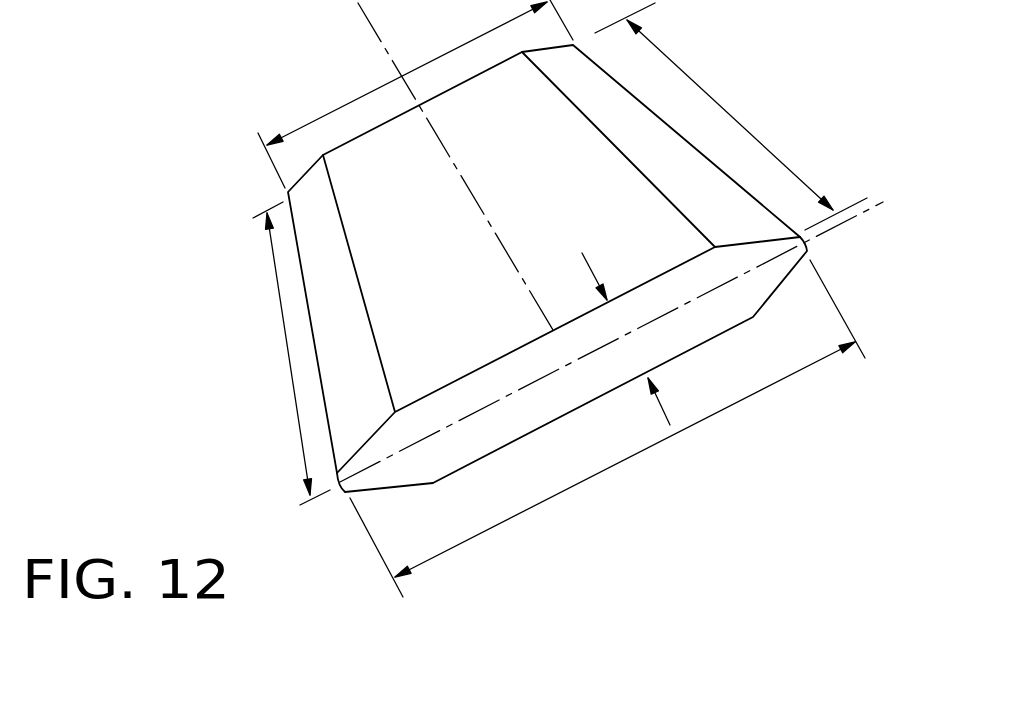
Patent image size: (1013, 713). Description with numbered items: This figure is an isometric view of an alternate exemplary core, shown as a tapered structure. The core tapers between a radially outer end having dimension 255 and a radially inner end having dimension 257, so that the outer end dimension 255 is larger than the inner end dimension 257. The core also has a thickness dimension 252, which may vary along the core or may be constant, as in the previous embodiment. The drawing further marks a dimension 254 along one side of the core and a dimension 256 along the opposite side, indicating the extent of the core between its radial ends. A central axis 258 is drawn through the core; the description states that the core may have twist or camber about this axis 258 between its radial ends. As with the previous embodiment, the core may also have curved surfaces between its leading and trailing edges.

The thickness dimension 252 is at (664, 412).
The height 254 is at (288, 355).
The radially outer end dimension 255 is at (623, 460).
The side depth 256 is at (733, 117).
The radially inner end dimension 257 is at (423, 63).
The axis 258 is at (456, 167).